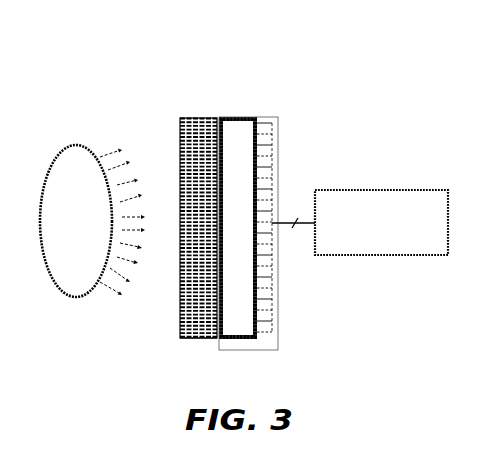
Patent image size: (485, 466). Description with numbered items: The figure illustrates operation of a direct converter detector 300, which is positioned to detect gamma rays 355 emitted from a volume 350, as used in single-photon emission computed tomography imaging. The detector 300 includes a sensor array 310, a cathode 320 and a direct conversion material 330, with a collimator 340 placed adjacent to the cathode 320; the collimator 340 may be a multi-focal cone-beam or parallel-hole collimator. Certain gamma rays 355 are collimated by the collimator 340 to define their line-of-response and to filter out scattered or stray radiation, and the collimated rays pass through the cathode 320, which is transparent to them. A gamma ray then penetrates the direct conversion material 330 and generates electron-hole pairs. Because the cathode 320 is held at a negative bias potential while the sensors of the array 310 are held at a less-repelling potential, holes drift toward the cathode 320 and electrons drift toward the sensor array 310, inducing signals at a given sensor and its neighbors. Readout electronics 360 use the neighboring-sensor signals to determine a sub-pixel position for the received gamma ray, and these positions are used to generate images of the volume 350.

The detector 300 is at (181, 58).
The sensor array 310 is at (260, 121).
The cathode 320 is at (216, 116).
The direct conversion material 330 is at (238, 117).
The collimator 340 is at (193, 342).
The volume 350 is at (90, 140).
The gamma rays 355 is at (130, 293).
The readout electronics 360 is at (375, 189).